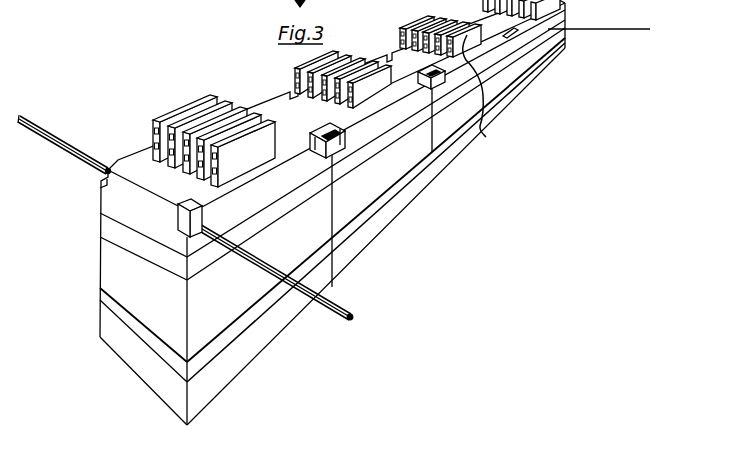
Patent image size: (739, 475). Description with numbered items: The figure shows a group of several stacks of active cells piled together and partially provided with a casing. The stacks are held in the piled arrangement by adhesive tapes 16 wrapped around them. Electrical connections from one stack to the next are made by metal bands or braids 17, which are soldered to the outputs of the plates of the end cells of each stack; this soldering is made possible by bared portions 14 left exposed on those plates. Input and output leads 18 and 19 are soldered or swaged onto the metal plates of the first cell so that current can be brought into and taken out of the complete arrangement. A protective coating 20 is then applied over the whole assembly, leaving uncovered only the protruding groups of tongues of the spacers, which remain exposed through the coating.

The bared portions 14 is at (196, 246).
The adhesive tapes 16 is at (135, 233).
The metal bands or braids 17 is at (347, 140).
The input lead 18 is at (347, 320).
The output lead 19 is at (67, 150).
The protective coating 20 is at (599, 20).